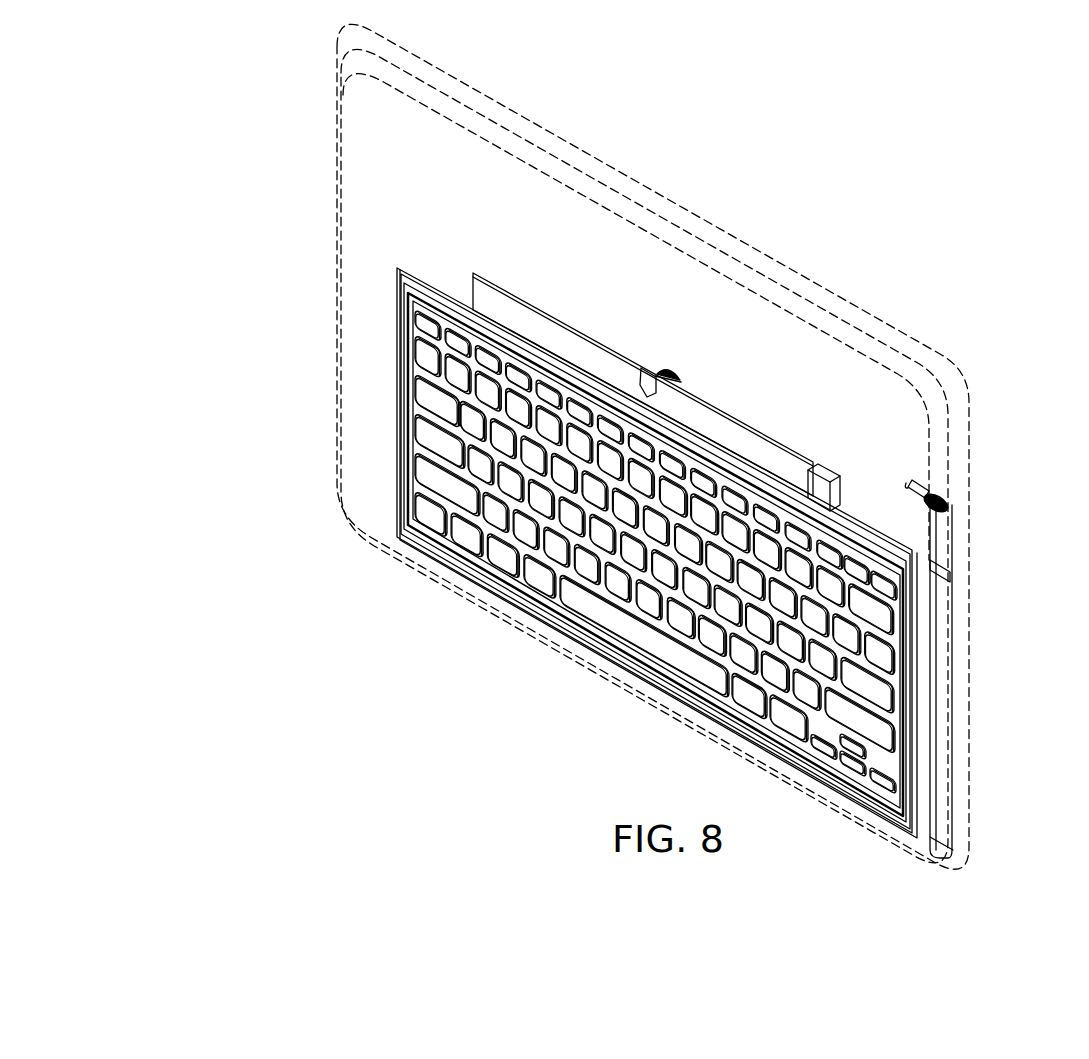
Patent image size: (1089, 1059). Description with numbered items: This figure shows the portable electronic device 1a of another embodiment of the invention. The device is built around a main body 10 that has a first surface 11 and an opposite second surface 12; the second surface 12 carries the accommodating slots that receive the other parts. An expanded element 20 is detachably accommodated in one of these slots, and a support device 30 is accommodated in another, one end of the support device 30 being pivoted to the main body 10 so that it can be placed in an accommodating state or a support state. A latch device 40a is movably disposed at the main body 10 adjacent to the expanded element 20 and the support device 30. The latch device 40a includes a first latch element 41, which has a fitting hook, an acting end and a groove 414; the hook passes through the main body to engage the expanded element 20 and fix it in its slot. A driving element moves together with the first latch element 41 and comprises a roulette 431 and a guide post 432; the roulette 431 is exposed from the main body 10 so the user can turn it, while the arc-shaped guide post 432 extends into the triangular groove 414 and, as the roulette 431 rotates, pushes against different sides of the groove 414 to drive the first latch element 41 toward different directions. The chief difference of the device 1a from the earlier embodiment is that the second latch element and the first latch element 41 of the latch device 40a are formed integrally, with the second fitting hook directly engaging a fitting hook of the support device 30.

The portable electronic device 1a is at (243, 185).
The main body 10 is at (950, 392).
The first surface 11 is at (350, 398).
The second surface 12 is at (900, 330).
The expanded element 20 is at (614, 635).
The support device 30 is at (952, 687).
The latch device 40a is at (621, 361).
The first latch element 41 is at (528, 302).
The groove 414 is at (642, 368).
The roulette 431 is at (677, 375).
The guide post 432 is at (660, 370).